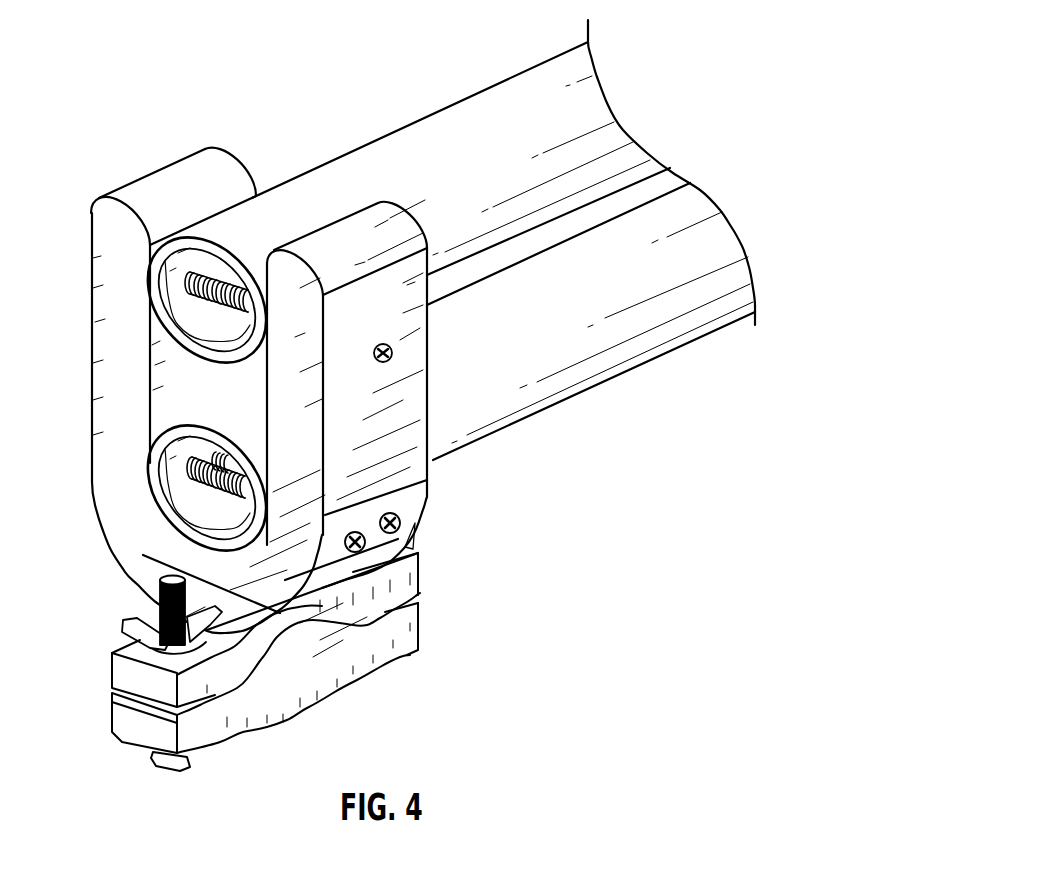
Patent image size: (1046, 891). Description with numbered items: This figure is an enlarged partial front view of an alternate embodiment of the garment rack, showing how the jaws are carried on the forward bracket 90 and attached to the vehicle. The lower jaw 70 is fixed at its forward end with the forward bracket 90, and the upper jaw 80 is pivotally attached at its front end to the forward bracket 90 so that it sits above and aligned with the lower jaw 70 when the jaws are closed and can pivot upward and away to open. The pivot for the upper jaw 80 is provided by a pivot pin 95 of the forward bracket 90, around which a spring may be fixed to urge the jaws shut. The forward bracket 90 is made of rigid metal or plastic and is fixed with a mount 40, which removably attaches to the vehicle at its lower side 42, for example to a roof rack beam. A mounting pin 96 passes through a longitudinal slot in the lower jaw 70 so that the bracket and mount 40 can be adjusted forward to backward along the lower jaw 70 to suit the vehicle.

The mount 40 is at (420, 580).
The lower side 42 is at (420, 630).
The lower jaw 70 is at (588, 368).
The upper jaw 80 is at (414, 143).
The forward bracket 90 is at (171, 166).
The pivot pin 95 is at (545, 431).
The mounting pin 96 is at (248, 487).